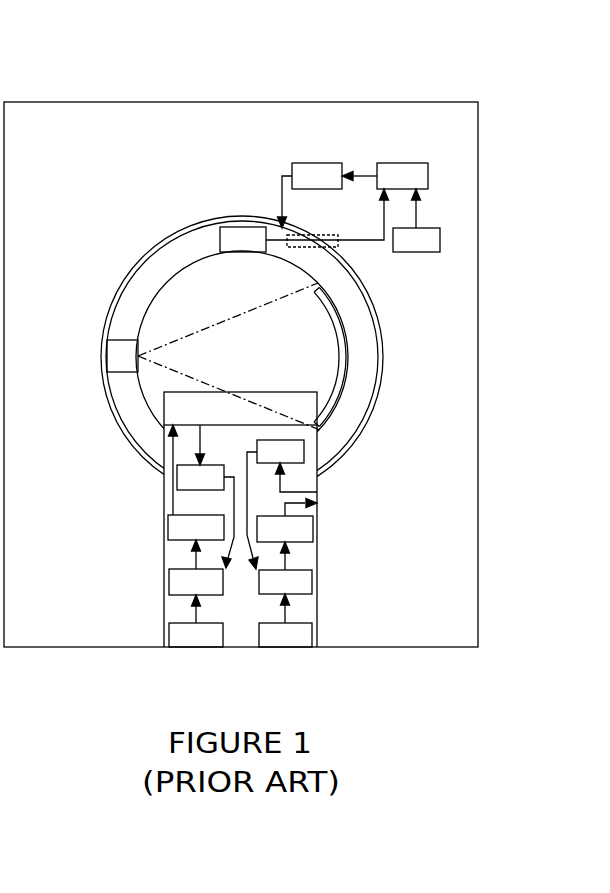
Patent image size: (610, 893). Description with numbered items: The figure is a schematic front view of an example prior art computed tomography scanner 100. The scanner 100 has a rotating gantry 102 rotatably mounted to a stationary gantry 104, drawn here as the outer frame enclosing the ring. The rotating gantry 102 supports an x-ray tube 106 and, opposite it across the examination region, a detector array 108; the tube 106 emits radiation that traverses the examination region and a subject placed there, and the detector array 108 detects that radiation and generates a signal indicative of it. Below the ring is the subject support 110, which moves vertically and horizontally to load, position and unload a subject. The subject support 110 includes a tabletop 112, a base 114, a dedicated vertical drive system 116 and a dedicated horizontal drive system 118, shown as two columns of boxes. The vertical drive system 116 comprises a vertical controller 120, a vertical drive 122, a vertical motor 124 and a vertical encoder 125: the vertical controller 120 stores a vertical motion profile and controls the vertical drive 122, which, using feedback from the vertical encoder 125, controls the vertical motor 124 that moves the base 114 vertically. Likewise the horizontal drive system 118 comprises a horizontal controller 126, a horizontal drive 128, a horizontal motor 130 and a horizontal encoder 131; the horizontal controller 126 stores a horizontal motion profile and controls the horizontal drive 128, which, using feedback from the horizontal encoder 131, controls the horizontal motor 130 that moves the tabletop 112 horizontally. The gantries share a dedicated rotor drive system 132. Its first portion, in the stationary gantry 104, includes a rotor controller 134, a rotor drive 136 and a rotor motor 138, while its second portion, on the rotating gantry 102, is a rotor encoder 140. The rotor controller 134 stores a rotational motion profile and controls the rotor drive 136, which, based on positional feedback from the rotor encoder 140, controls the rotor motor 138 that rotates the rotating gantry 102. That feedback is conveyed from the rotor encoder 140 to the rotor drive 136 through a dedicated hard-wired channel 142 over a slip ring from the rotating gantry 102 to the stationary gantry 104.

The computed tomography scanner 100 is at (428, 35).
The rotating gantry 102 is at (113, 306).
The stationary gantry 104 is at (244, 102).
The x-ray tube 106 is at (122, 340).
The detector array 108 is at (343, 357).
The subject support 110 is at (264, 533).
The tabletop 112 is at (317, 410).
The base 114 is at (317, 441).
The vertical drive system 116 is at (283, 668).
The horizontal drive system 118 is at (199, 668).
The vertical controller 120 is at (312, 628).
The vertical drive 122 is at (312, 583).
The vertical motor 124 is at (313, 530).
The vertical encoder 125 is at (304, 452).
The horizontal controller 126 is at (169, 632).
The horizontal drive 128 is at (169, 582).
The horizontal motor 130 is at (168, 526).
The horizontal encoder 131 is at (177, 478).
The rotor drive system 132 is at (184, 138).
The rotor controller 134 is at (407, 252).
The rotor drive 136 is at (393, 163).
The rotor motor 138 is at (315, 163).
The rotor encoder 140 is at (243, 227).
The channel 142 is at (330, 247).